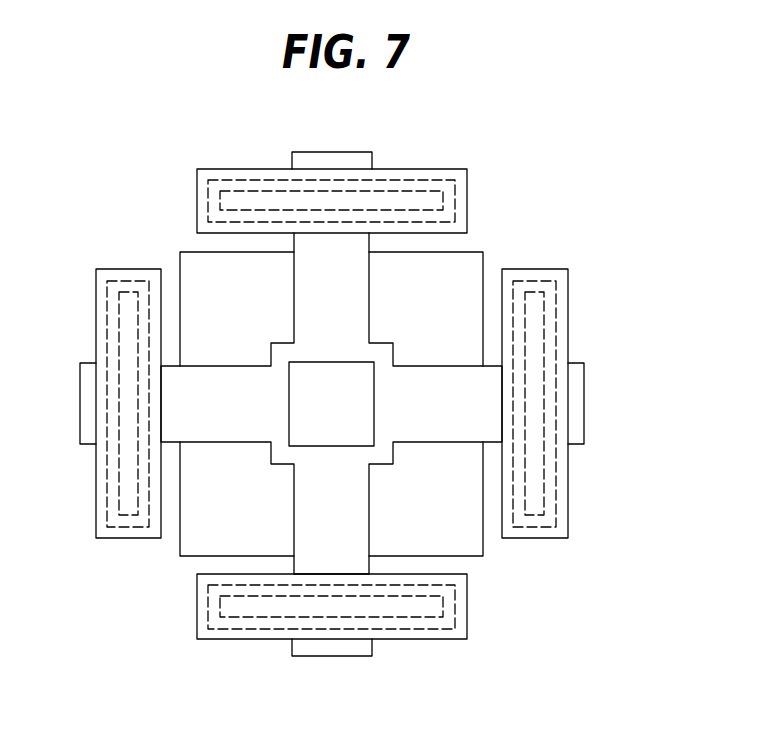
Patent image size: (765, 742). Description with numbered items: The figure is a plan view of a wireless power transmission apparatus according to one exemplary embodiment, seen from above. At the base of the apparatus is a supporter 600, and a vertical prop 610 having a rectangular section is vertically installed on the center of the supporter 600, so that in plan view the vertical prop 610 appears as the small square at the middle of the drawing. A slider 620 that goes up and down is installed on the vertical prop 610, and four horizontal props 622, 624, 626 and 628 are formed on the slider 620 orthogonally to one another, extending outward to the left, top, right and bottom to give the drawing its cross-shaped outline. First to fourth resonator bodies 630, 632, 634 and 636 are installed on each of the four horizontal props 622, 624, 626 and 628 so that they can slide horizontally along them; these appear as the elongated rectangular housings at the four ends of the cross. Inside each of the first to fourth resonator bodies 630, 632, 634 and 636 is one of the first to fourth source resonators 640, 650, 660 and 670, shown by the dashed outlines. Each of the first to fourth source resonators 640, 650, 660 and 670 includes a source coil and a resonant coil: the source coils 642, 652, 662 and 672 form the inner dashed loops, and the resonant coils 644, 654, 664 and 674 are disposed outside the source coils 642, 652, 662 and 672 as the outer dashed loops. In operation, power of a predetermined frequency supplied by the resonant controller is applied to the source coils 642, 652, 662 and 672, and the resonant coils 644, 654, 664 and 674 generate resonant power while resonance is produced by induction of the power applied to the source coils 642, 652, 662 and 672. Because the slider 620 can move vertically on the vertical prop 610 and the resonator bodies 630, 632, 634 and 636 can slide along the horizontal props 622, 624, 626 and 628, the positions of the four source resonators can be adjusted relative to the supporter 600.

The supporter 600 is at (472, 270).
The vertical prop 610 is at (305, 438).
The slider 620 is at (387, 457).
The horizontal prop 622 is at (226, 385).
The horizontal prop 624 is at (347, 285).
The horizontal prop 626 is at (462, 372).
The horizontal prop 628 is at (316, 563).
The first resonator body 630 is at (110, 533).
The second resonator body 632 is at (463, 180).
The third resonator body 634 is at (562, 477).
The fourth resonator body 636 is at (449, 636).
The first source resonator 640 is at (92, 395).
The source coil 642 is at (120, 295).
The resonant coil 644 is at (107, 335).
The second source resonator 650 is at (379, 169).
The source coil 652 is at (252, 192).
The resonant coil 654 is at (378, 180).
The third source resonator 660 is at (578, 402).
The source coil 662 is at (544, 315).
The resonant coil 664 is at (556, 287).
The fourth source resonator 670 is at (368, 645).
The source coil 672 is at (443, 612).
The resonant coil 674 is at (456, 587).